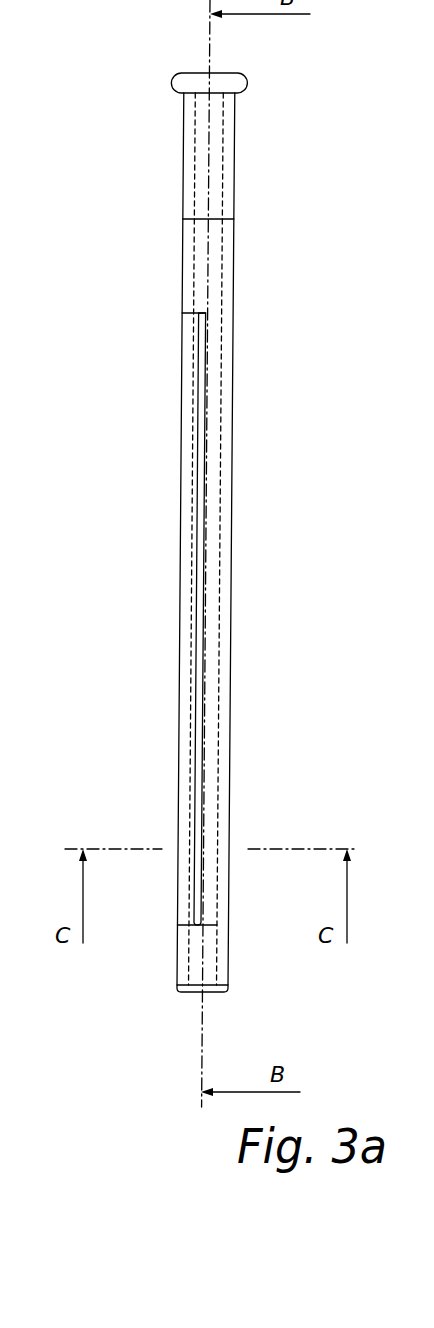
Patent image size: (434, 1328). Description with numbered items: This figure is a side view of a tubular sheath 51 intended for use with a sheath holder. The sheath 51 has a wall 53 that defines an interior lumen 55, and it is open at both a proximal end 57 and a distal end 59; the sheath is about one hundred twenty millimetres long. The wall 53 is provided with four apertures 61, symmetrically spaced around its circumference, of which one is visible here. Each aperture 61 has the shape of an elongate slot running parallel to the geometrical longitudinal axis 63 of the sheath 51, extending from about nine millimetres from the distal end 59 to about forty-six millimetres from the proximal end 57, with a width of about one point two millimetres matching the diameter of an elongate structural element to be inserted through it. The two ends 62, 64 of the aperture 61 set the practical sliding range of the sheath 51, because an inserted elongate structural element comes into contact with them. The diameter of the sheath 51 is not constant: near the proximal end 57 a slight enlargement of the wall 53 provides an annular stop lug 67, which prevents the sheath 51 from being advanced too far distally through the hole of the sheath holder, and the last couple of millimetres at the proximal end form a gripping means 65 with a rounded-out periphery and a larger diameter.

The tubular sheath 51 is at (274, 116).
The wall 53 is at (232, 437).
The interior lumen 55 is at (215, 292).
The proximal end 57 is at (207, 72).
The distal end 59 is at (194, 992).
The aperture 61 is at (197, 683).
The end of aperture 62 is at (200, 313).
The longitudinal axis 63 is at (201, 1050).
The end of aperture 64 is at (193, 926).
The gripping means 65 is at (180, 80).
The annular stop lug 67 is at (195, 219).